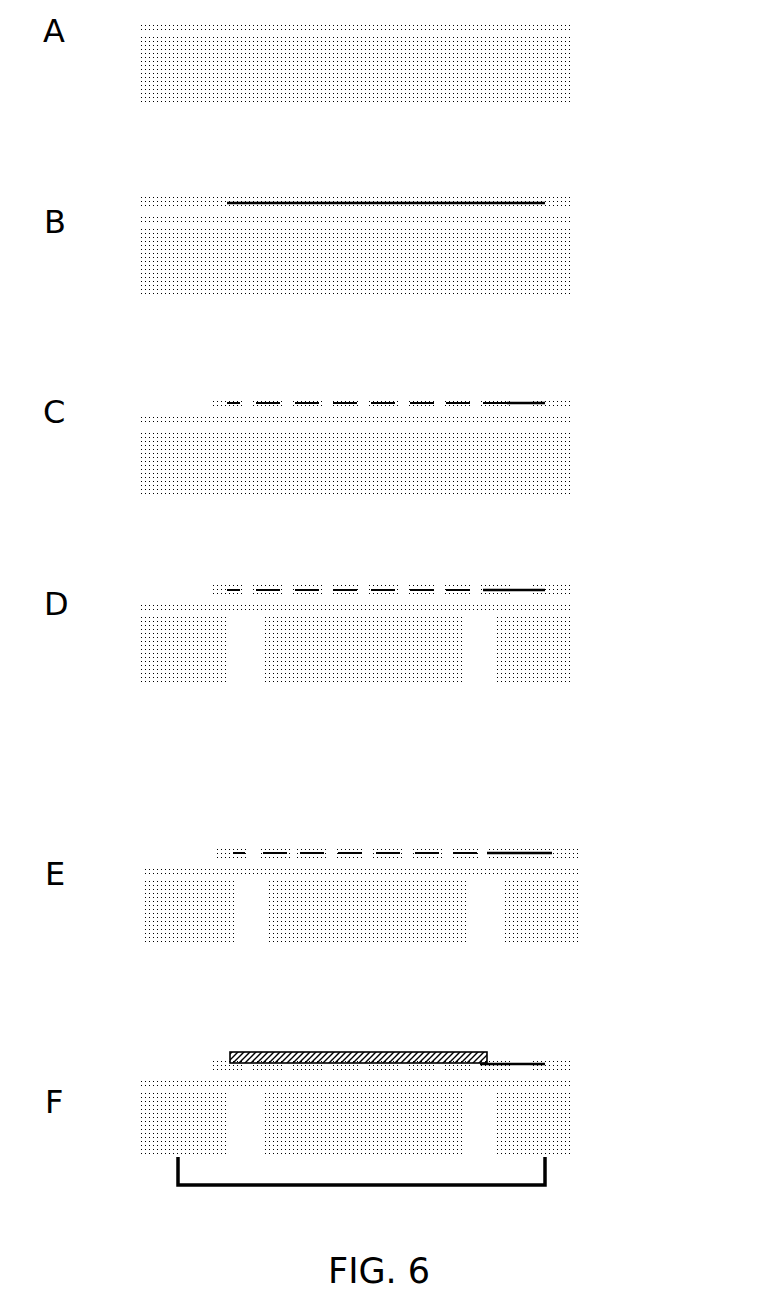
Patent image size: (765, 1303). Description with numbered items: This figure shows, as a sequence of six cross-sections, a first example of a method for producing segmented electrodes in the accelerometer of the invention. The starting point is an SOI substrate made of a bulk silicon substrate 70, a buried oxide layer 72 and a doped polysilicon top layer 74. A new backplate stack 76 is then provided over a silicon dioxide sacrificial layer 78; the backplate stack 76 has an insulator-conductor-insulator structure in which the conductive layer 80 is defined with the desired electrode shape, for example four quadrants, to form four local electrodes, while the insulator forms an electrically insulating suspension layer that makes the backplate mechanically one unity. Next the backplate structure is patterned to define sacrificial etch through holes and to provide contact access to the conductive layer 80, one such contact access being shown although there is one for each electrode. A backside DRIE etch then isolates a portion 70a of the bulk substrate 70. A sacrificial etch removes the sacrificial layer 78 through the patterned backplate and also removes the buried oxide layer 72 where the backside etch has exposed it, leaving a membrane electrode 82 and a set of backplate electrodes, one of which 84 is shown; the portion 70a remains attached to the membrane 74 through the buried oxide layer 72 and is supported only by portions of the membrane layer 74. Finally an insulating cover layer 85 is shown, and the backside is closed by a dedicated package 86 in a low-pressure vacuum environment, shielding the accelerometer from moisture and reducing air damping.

The bulk silicon substrate 70 is at (560, 82).
The buried oxide layer 72 is at (565, 34).
The doped polysilicon top layer 74 is at (573, 26).
The backplate stack 76 is at (573, 202).
The SiO2 sacrificial layer 78 is at (563, 212).
The conductive layer 80 is at (480, 205).
The portion of the bulk substrate 70a is at (438, 660).
The membrane electrode 82 is at (170, 868).
The backplate electrode 84 is at (522, 850).
The insulating cover layer 85 is at (376, 1057).
The dedicated package 86 is at (548, 1165).